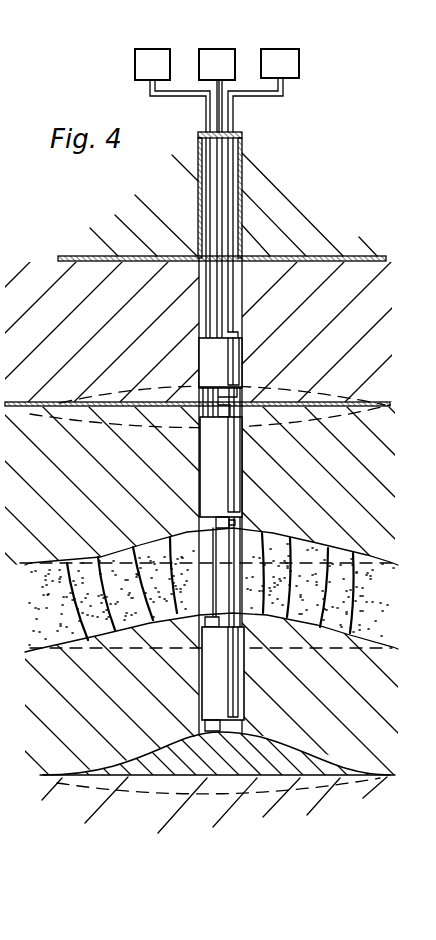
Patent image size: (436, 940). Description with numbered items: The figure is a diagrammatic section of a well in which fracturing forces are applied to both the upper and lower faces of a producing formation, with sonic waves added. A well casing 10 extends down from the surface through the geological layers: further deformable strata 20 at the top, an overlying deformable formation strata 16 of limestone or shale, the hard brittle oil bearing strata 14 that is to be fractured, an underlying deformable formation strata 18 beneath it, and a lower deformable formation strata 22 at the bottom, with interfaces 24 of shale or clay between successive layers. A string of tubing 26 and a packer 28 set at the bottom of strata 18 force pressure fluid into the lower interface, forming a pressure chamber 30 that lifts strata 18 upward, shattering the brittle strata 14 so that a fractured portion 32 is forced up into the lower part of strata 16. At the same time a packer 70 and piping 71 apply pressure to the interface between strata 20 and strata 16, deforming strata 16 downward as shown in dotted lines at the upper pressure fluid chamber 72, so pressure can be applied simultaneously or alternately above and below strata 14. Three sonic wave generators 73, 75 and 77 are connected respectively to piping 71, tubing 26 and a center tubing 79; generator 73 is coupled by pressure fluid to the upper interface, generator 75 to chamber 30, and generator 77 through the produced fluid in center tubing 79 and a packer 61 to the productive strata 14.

The well casing 10 is at (237, 225).
The oil bearing strata 14 is at (50, 572).
The overlying deformable formation strata 16 is at (48, 425).
The underlying deformable formation strata 18 is at (88, 738).
The deformable formation strata 20 is at (62, 258).
The deformable formation strata 22 is at (120, 825).
The interfaces 24 is at (15, 403).
The string of tubing 26 is at (211, 190).
The packer 28 is at (232, 697).
The pressure chamber 30 is at (185, 760).
The fractured portion 32 is at (257, 538).
The packer 61 is at (227, 478).
The packer 70 is at (212, 352).
The piping 71 is at (233, 118).
The upper pressure fluid chamber 72 is at (167, 428).
The sonic wave generator 73 is at (278, 58).
The sonic wave generator 75 is at (148, 66).
The sonic wave generator 77 is at (218, 58).
The center tubing 79 is at (218, 87).